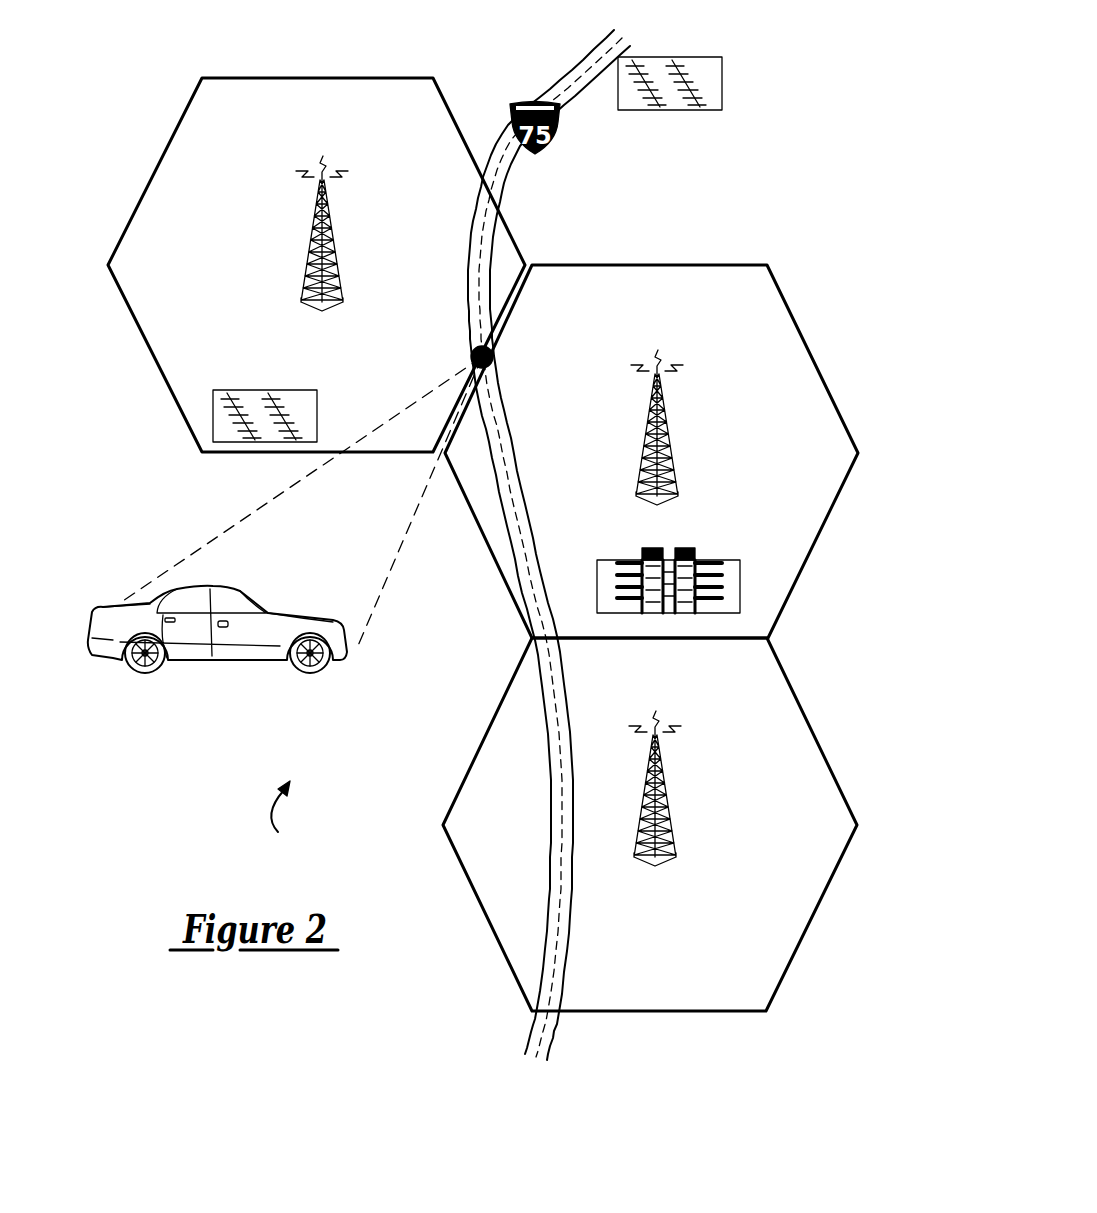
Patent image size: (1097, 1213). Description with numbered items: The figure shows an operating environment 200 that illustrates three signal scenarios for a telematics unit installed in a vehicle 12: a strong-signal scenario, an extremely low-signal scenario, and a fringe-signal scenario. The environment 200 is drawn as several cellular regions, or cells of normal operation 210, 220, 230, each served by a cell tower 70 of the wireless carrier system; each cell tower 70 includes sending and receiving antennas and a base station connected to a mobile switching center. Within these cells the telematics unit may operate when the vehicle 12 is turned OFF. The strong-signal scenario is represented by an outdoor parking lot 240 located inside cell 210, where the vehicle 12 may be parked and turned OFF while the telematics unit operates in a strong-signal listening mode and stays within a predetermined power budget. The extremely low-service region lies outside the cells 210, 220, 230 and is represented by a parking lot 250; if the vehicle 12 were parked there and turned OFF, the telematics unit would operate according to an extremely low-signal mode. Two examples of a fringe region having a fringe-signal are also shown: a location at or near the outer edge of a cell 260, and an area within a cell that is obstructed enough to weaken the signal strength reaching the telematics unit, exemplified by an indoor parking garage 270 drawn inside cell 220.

The vehicle 12 is at (120, 603).
The cell tower 70 is at (342, 278).
The operating environment 200 is at (295, 814).
The cell 210 is at (328, 78).
The cell 220 is at (662, 265).
The cell 230 is at (655, 638).
The outdoor parking lot 240 is at (253, 390).
The parking lot 250 is at (647, 112).
The outer edge of a cell 260 is at (494, 355).
The indoor parking garage 270 is at (630, 562).